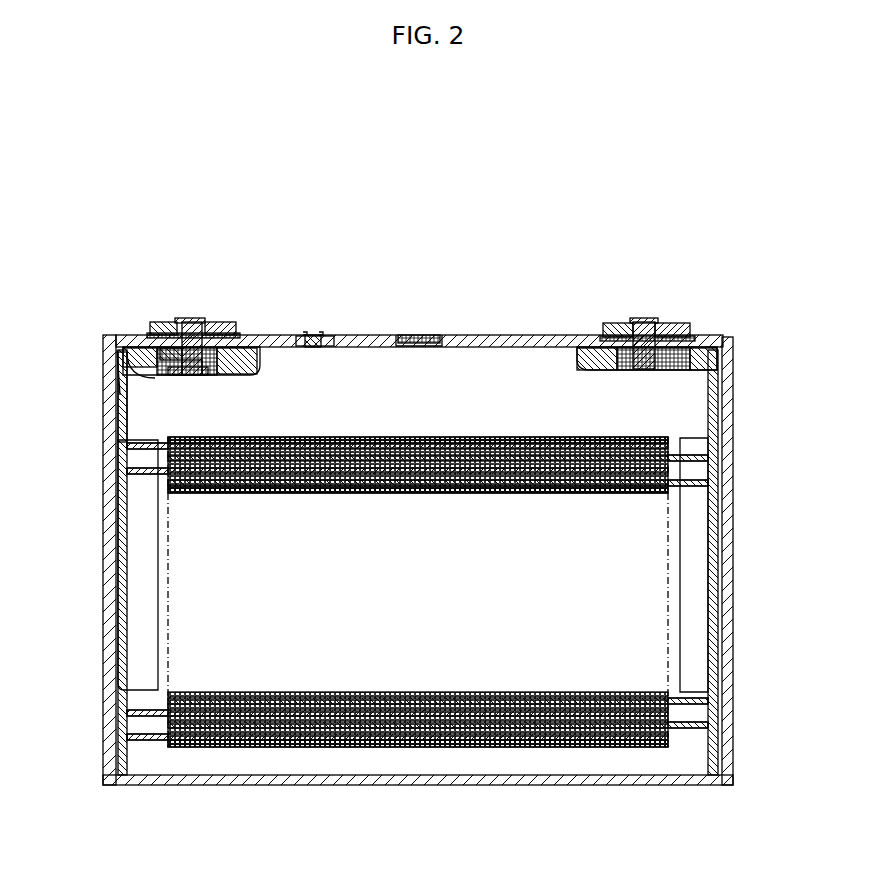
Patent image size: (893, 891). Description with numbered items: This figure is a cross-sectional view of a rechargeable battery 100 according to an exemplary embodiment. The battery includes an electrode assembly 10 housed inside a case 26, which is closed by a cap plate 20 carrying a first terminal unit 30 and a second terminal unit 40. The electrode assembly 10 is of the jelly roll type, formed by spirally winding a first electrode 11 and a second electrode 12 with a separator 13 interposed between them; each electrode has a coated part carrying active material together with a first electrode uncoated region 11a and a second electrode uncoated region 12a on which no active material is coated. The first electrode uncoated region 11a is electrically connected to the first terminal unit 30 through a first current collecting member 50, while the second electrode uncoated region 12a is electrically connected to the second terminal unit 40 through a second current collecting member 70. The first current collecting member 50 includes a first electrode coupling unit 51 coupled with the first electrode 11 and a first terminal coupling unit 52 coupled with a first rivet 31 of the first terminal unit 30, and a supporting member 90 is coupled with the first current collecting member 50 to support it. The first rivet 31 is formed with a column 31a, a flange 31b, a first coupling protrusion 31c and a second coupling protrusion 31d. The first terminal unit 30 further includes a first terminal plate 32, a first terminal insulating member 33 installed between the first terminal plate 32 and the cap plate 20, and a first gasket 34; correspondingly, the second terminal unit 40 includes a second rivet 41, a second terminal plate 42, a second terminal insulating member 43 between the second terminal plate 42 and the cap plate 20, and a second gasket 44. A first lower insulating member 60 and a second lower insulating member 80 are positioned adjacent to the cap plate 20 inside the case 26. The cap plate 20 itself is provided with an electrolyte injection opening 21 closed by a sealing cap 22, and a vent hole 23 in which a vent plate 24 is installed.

The rechargeable battery 100 is at (402, 184).
The electrode assembly 10 is at (417, 642).
The first electrode 11 is at (222, 742).
The first electrode uncoated region 11a is at (141, 742).
The second electrode 12 is at (293, 742).
The second electrode uncoated region 12a is at (684, 742).
The separator 13 is at (410, 742).
The cap plate 20 is at (476, 334).
The electrolyte injection opening 21 is at (312, 348).
The sealing cap 22 is at (313, 334).
The vent hole 23 is at (430, 348).
The vent plate 24 is at (420, 335).
The case 26 is at (727, 648).
The first terminal unit 30 is at (223, 328).
The first rivet 31 is at (192, 319).
The column 31a is at (215, 378).
The flange 31b is at (256, 352).
The first coupling protrusion 31c is at (192, 378).
The second coupling protrusion 31d is at (172, 378).
The first terminal plate 32 is at (215, 322).
The first terminal insulating member 33 is at (152, 266).
The first gasket 34 is at (162, 322).
The second terminal unit 40 is at (682, 301).
The second rivet 41 is at (640, 322).
The second terminal plate 42 is at (670, 322).
The second terminal insulating member 43 is at (592, 270).
The second gasket 44 is at (606, 322).
The first current collecting member 50 is at (117, 468).
The first electrode coupling unit 51 is at (140, 570).
The first terminal coupling unit 52 is at (127, 380).
The first lower insulating member 60 is at (116, 354).
The second current collecting member 70 is at (712, 519).
The second lower insulating member 80 is at (716, 355).
The supporting member 90 is at (150, 372).